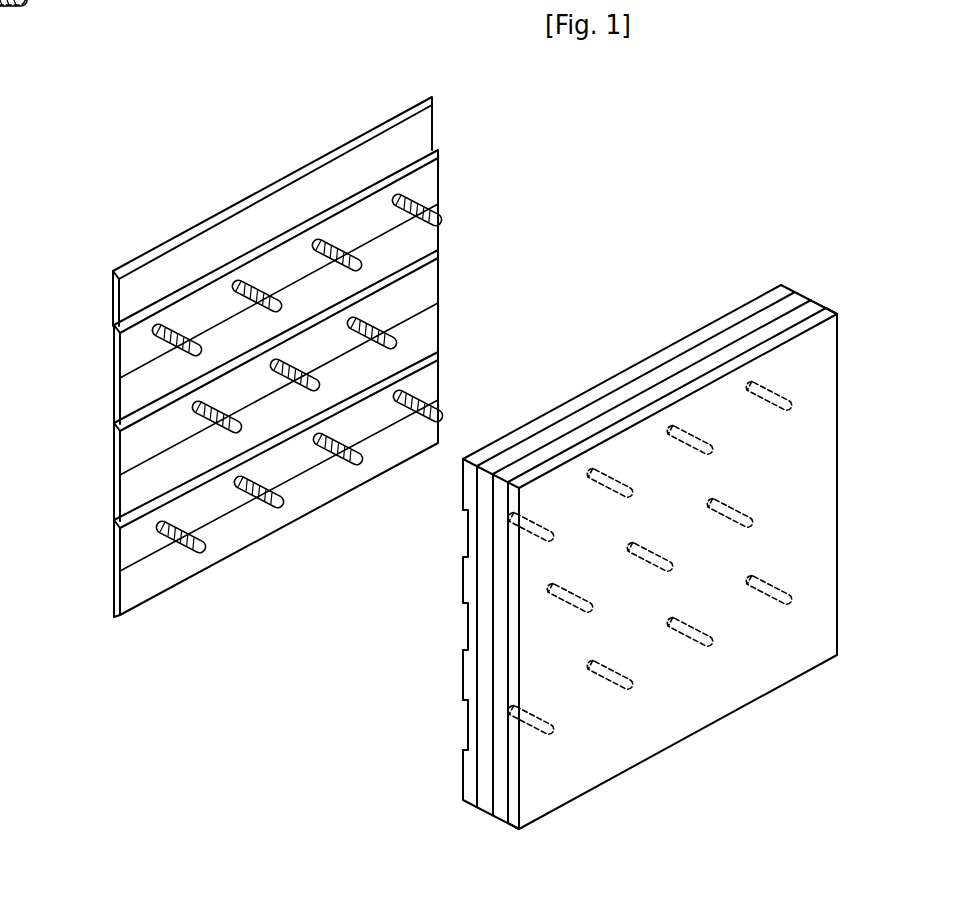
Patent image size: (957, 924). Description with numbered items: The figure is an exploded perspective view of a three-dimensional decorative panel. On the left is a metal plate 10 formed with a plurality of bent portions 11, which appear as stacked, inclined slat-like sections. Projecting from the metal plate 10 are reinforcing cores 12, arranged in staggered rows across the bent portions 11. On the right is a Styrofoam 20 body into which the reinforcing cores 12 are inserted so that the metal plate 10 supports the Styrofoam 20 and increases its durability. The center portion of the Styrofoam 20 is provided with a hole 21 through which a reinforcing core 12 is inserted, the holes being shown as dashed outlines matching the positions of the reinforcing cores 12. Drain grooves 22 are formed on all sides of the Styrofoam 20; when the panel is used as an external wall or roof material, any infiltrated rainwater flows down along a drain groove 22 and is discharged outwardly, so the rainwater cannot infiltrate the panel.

The metal plate 10 is at (265, 200).
The bent portions 11 is at (117, 560).
The reinforcing cores 12 is at (447, 215).
The Styrofoam 20 is at (702, 710).
The hole 21 is at (772, 393).
The drain grooves 22 is at (802, 300).